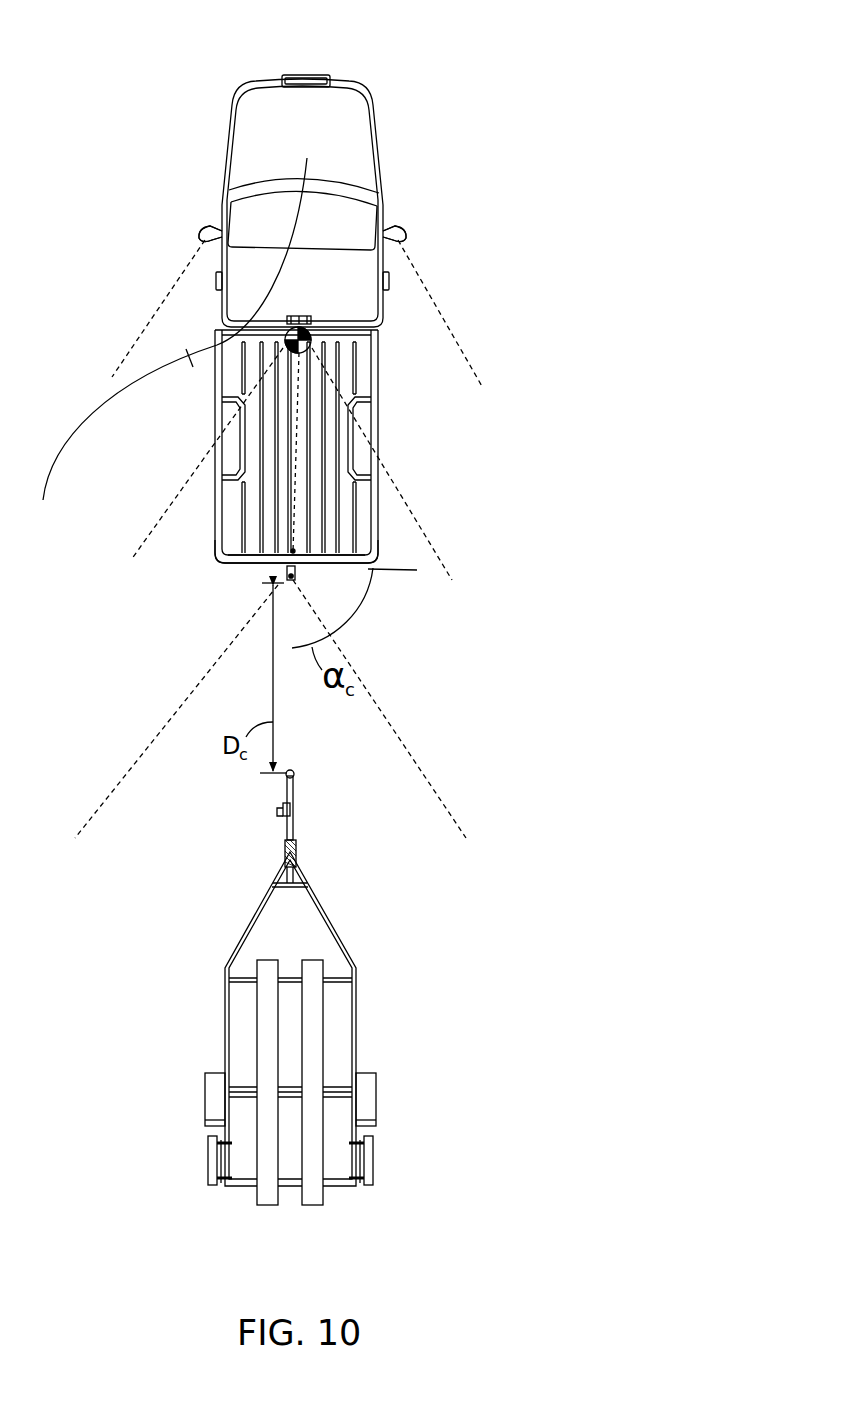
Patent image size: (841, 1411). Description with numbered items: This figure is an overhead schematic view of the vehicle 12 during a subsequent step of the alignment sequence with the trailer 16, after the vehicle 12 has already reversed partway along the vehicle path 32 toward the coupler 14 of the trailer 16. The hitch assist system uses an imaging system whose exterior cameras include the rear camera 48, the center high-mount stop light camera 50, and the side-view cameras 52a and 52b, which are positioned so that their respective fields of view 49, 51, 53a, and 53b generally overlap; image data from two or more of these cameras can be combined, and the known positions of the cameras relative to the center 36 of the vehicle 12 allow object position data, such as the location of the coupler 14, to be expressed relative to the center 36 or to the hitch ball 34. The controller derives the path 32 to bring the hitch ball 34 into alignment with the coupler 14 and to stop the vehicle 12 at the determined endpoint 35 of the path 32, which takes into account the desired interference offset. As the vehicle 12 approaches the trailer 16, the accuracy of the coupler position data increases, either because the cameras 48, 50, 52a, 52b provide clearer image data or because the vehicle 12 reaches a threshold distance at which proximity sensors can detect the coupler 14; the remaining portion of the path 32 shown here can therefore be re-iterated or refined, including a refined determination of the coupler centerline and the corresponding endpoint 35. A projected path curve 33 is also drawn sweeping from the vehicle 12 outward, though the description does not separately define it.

The vehicle 12 is at (386, 40).
The coupler 14 is at (296, 774).
The trailer 16 is at (231, 933).
The vehicle path 32 is at (308, 463).
The projected path 33 is at (272, 314).
The hitch ball 34 is at (287, 577).
The endpoint 35 is at (290, 550).
The center 36 is at (314, 333).
The rear camera 48 is at (292, 563).
The field of view 49 is at (186, 702).
The center high-mount stop light camera 50 is at (302, 327).
The field of view 51 is at (140, 551).
The side-view camera 52a is at (398, 242).
The side-view camera 52b is at (204, 240).
The field of view 53a is at (463, 347).
The field of view 53b is at (127, 352).